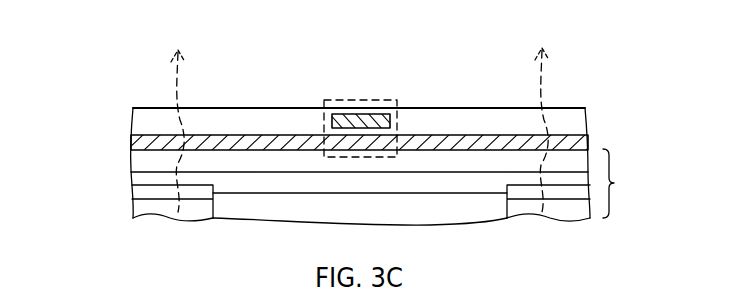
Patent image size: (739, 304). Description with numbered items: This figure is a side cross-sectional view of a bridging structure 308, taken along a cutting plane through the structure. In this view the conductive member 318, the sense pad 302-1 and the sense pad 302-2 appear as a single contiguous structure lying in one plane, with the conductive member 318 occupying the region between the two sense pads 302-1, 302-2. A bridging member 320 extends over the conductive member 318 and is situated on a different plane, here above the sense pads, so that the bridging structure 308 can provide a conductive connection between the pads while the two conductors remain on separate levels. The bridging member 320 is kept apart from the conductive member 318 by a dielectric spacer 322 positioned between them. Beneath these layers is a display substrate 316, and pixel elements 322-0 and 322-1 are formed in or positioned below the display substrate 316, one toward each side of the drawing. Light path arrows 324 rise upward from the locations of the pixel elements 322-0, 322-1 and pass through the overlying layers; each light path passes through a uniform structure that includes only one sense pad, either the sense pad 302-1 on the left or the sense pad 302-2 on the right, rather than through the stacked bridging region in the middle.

The display substrate 316 is at (391, 163).
The conductive member 318 is at (392, 134).
The bridging member 320 is at (398, 105).
The bridging structure 308 is at (355, 100).
The dielectric spacer 322 is at (336, 128).
The sense pad 302-1 is at (158, 135).
The sense pad 302-2 is at (566, 135).
The pixel element 322-0 is at (186, 212).
The pixel element 322-1 is at (544, 212).
The light path arrows 324 is at (177, 84).